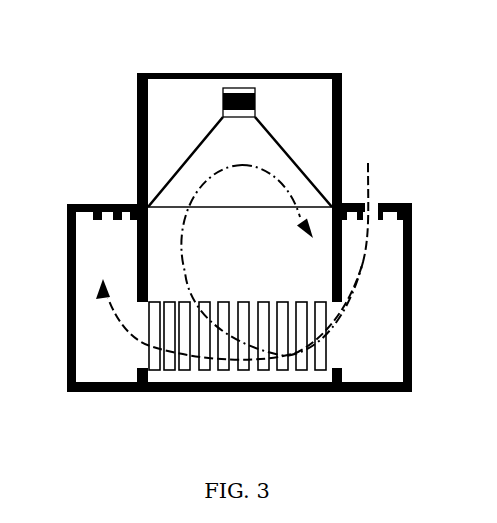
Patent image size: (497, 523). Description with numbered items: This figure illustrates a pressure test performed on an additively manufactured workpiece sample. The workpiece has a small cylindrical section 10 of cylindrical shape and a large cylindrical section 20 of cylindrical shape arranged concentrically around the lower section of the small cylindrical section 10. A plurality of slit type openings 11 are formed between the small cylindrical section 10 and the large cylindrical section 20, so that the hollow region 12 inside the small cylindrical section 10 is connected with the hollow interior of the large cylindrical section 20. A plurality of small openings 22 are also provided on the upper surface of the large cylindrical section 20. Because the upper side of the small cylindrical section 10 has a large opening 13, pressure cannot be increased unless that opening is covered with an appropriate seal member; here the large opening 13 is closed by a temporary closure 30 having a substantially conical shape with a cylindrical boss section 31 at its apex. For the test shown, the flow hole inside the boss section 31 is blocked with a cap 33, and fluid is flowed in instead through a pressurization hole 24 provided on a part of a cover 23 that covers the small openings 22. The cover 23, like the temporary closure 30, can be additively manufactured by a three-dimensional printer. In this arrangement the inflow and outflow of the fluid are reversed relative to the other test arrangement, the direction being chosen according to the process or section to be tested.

The small cylindrical section 10 is at (343, 101).
The slit type openings 11 is at (149, 355).
The hollow region 12 is at (307, 271).
The large opening 13 is at (166, 84).
The large cylindrical section 20 is at (413, 248).
The small openings 22 is at (84, 221).
The cover 23 is at (85, 203).
The pressurization hole 24 is at (378, 197).
The temporary closure 30 is at (283, 148).
The cylindrical boss section 31 is at (254, 100).
The cap 33 is at (237, 90).